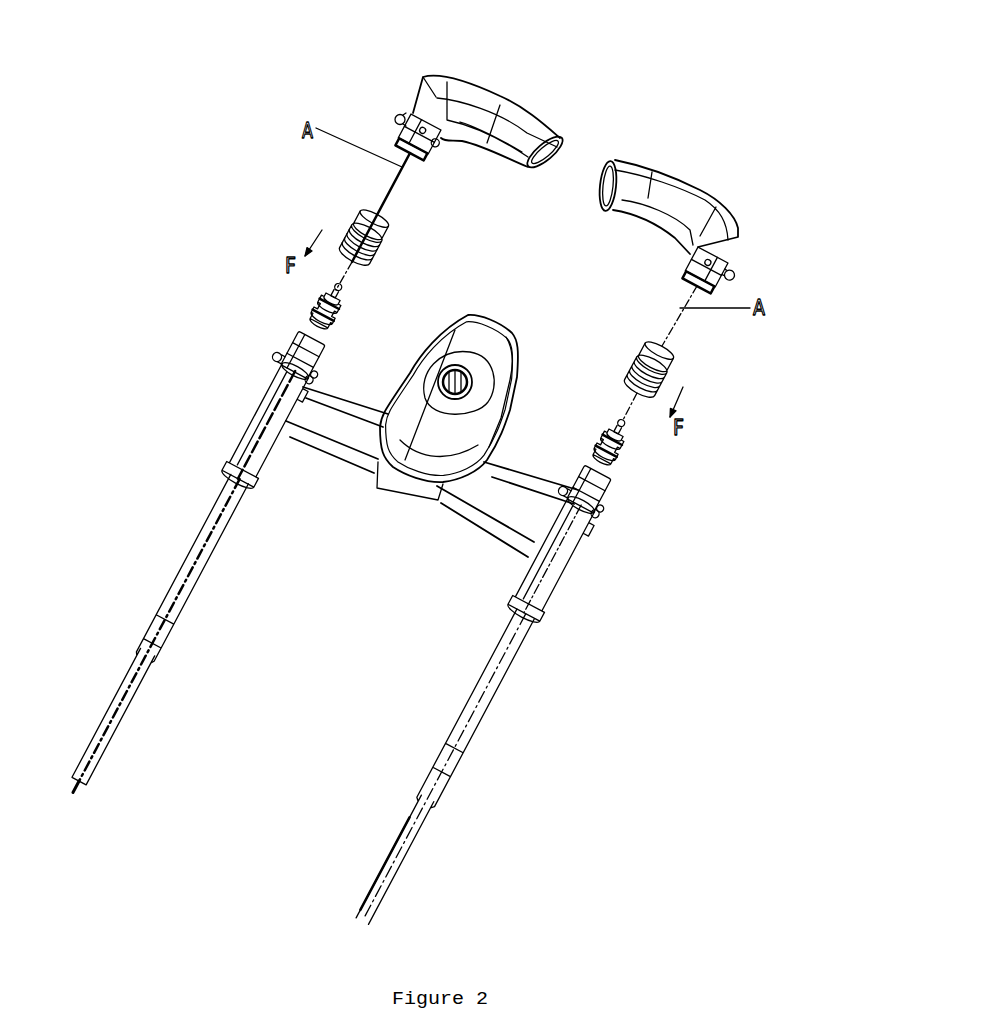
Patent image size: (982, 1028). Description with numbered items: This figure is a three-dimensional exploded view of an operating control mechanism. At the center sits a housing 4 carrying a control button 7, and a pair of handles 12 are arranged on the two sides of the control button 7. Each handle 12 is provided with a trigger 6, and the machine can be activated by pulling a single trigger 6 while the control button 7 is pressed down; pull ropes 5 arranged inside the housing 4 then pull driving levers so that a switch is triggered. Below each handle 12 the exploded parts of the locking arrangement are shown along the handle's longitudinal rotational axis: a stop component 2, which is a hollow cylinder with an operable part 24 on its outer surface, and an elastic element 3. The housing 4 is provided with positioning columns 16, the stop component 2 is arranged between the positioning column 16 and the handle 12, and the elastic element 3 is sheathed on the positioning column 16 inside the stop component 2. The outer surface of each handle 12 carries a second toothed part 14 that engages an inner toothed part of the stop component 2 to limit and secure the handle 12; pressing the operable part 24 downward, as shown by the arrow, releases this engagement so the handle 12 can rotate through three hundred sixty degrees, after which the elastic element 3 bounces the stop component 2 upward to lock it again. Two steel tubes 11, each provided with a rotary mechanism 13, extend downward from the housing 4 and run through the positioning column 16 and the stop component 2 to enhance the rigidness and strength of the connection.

The stop component 2 is at (372, 212).
The elastic element 3 is at (335, 328).
The housing 4 is at (328, 427).
The pull rope 5 is at (342, 292).
The trigger 6 is at (497, 157).
The control button 7 is at (515, 340).
The steel tube 11 is at (208, 523).
The handle 12 is at (423, 93).
The rotary mechanism 13 is at (243, 445).
The second toothed part 14 is at (398, 135).
The positioning column 16 is at (287, 344).
The operable part 24 is at (387, 235).